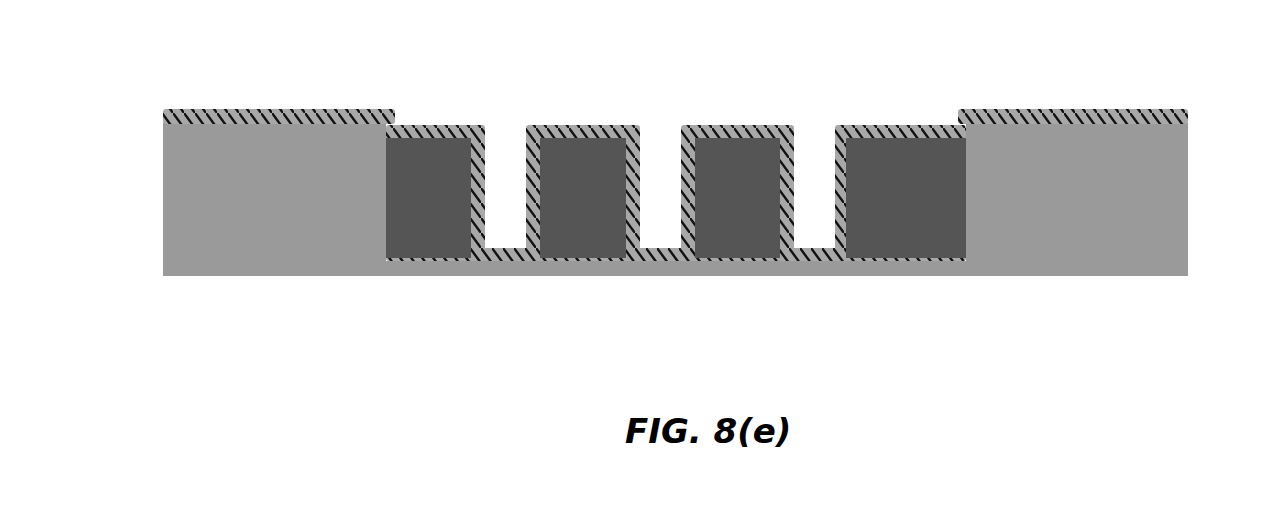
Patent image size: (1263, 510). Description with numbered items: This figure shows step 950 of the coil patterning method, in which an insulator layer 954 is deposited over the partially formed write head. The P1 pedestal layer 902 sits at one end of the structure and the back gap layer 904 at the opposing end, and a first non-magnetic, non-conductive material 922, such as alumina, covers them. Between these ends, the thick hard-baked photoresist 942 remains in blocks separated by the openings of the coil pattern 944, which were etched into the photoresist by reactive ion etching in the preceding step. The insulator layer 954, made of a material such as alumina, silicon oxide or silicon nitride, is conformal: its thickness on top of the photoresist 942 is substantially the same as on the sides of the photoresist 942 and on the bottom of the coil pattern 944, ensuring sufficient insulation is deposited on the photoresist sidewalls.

The P1 pedestal layer 902 is at (167, 190).
The back gap layer 904 is at (1173, 190).
The first non-magnetic, non-conductive material 922 is at (157, 112).
The photoresist 942 is at (395, 148).
The coil pattern 944 is at (492, 145).
The step of depositing an insulator layer 950 is at (156, 88).
The insulator layer 954 is at (293, 100).